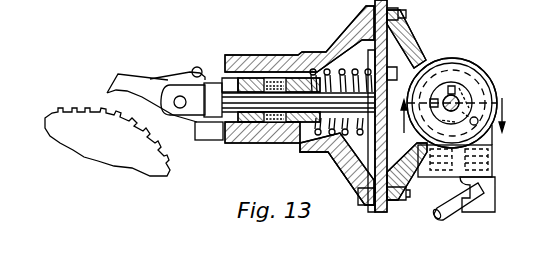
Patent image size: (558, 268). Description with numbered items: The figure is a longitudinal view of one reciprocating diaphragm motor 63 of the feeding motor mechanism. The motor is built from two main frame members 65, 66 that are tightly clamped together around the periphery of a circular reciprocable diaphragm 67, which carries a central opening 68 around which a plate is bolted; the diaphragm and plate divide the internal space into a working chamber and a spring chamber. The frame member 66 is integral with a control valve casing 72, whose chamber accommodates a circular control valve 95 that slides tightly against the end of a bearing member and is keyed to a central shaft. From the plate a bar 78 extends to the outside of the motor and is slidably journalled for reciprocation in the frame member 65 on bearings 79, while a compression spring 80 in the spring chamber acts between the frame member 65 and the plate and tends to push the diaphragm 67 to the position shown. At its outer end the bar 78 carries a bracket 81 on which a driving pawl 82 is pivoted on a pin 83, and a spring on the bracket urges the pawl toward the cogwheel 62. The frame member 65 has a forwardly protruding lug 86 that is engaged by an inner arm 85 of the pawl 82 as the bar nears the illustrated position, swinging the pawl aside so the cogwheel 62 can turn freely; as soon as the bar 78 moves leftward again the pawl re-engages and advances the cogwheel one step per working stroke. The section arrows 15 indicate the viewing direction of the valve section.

The section line 15 is at (468, 118).
The cogwheel 62 is at (88, 140).
The reciprocating diaphragm motor 63 is at (471, 52).
The frame member 65 is at (338, 52).
The frame member 66 is at (407, 42).
The diaphragm 67 is at (402, 22).
The opening 68 is at (382, 121).
The control valve casing 72 is at (493, 83).
The bar 78 is at (252, 100).
The bearings 79 is at (289, 141).
The compression spring 80 is at (338, 150).
The bracket 81 is at (212, 100).
The driving pawl 82 is at (125, 82).
The pin 83 is at (179, 96).
The inner arm 85 is at (193, 126).
The lug 86 is at (210, 132).
The control valve 95 is at (462, 124).